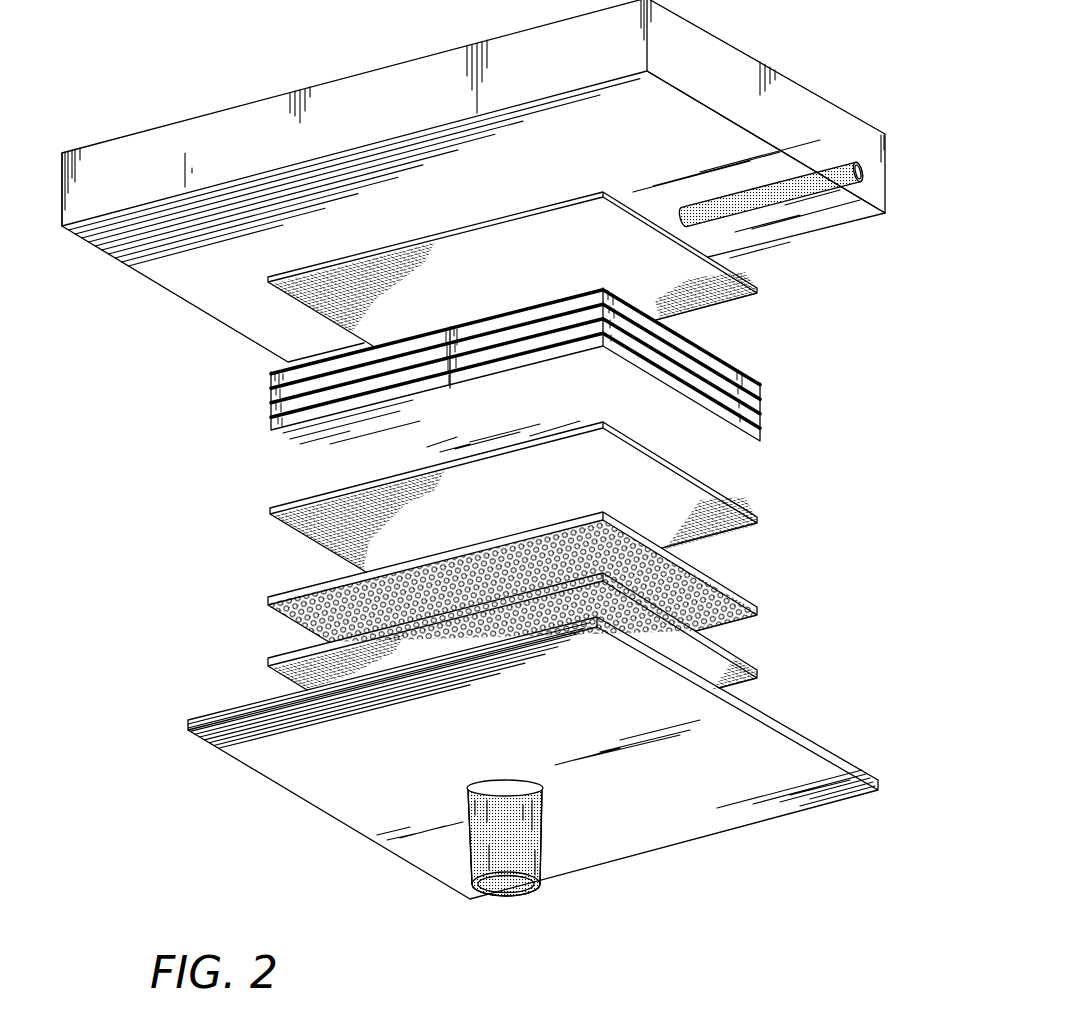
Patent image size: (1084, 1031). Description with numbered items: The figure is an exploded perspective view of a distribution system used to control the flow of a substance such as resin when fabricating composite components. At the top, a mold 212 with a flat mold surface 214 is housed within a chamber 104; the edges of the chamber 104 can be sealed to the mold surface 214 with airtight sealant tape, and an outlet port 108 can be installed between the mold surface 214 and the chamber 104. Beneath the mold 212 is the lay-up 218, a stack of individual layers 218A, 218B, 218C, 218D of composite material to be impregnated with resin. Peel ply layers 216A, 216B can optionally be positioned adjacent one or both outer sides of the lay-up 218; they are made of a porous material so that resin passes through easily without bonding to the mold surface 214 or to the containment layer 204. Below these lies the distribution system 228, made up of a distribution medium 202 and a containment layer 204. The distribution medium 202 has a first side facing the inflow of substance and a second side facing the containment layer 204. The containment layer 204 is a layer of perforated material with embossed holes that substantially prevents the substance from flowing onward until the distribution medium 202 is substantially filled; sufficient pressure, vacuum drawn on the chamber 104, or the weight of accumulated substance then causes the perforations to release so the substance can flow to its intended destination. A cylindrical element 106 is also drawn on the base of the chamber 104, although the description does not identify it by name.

The mold 212 is at (803, 93).
The mold surface 214 is at (262, 345).
The outlet port 108 is at (865, 171).
The peel ply layer 216B is at (760, 292).
The lay-up 218 is at (280, 442).
The lay-up layer 218A is at (760, 383).
The lay-up layer 218B is at (760, 400).
The lay-up layer 218C is at (760, 420).
The lay-up layer 218D is at (760, 440).
The peel ply layer 216A is at (760, 523).
The containment layer 204 is at (760, 610).
The distribution medium 202 is at (760, 672).
The distribution system 228 is at (234, 592).
The chamber 104 is at (822, 818).
The outlet port 106 is at (547, 846).